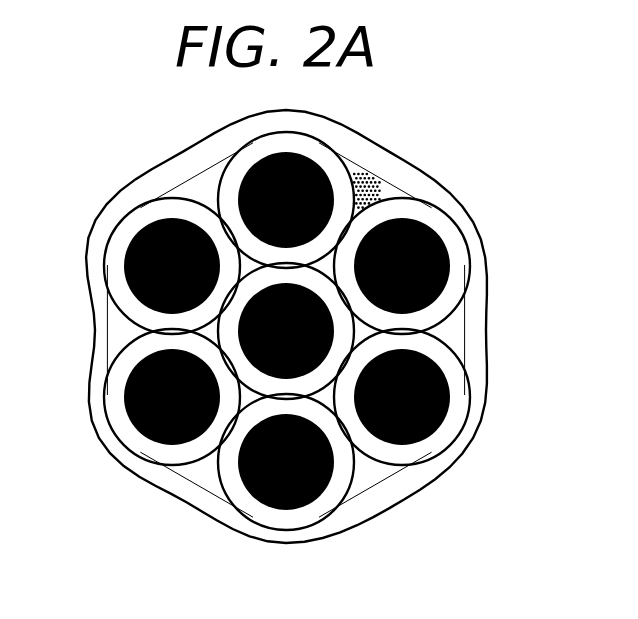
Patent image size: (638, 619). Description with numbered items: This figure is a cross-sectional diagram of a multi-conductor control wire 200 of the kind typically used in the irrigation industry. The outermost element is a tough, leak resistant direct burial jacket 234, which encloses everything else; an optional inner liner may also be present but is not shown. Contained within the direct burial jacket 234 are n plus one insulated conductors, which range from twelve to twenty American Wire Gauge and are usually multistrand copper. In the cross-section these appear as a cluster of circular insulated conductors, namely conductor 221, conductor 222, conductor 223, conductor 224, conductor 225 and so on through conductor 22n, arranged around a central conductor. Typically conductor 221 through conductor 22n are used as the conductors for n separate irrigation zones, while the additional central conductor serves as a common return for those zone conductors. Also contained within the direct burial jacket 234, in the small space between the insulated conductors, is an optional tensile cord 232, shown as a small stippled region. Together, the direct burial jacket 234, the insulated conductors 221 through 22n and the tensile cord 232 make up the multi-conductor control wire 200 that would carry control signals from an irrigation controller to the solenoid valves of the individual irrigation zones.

The multi-conductor control wire 200 is at (546, 121).
The conductor 1 221 is at (322, 163).
The conductor 2 222 is at (432, 225).
The conductor 3 223 is at (447, 404).
The conductor 4 224 is at (262, 506).
The conductor 5 225 is at (128, 406).
The conductor n 22n is at (152, 222).
The tensile cord 232 is at (356, 178).
The direct burial jacket 234 is at (492, 245).